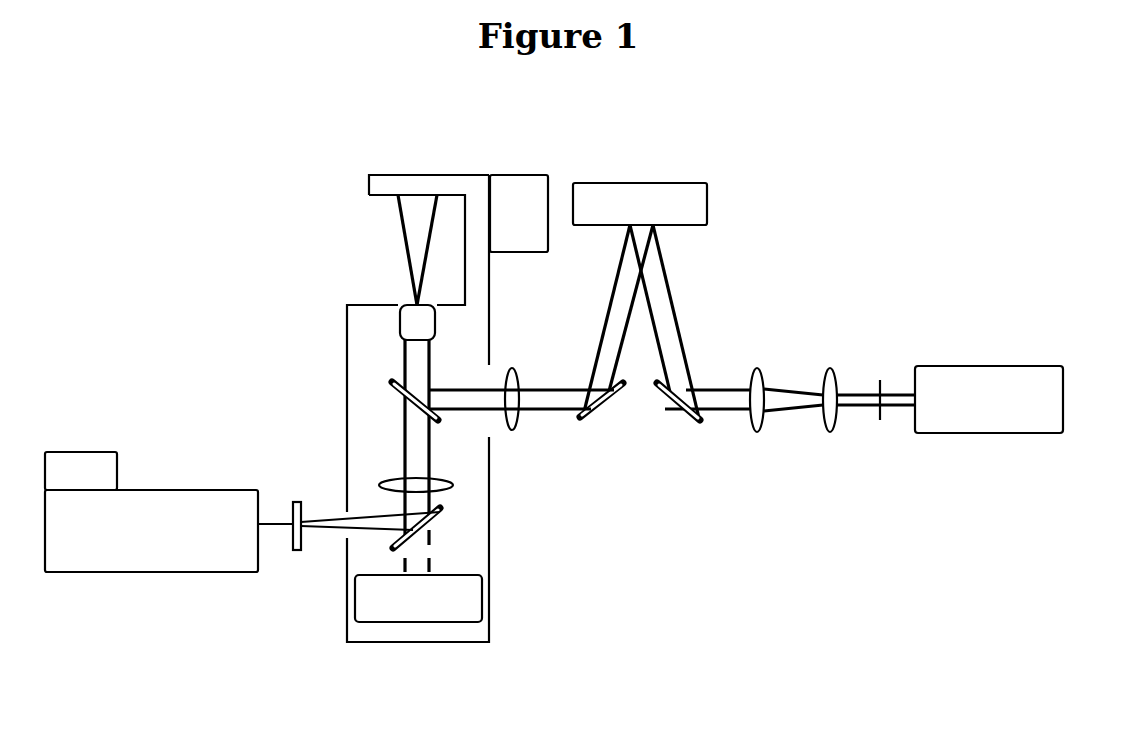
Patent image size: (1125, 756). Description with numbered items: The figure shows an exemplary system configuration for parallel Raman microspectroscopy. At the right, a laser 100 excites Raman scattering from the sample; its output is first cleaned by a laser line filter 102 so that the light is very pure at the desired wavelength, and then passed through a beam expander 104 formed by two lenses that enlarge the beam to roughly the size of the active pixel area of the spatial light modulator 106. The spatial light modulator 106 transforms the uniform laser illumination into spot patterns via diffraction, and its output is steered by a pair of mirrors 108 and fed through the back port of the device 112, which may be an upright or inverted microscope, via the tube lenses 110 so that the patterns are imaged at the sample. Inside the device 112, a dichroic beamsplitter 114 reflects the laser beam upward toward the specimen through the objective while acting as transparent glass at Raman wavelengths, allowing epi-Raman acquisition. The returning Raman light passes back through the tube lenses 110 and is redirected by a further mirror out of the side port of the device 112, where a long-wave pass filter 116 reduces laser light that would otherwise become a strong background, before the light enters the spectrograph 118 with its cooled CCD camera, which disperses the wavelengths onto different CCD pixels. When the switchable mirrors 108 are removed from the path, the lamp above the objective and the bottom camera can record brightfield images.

The laser 100 is at (1052, 358).
The laser line filter 102 is at (880, 323).
The beam expander 104 is at (827, 332).
The spatial light modulator 106 is at (643, 183).
The mirrors 108 is at (667, 450).
The tube lenses 110 is at (521, 406).
The device 112 is at (423, 680).
The dichroic beamsplitter 114 is at (340, 395).
The long-wave pass filter 116 is at (303, 552).
The spectrograph 118 is at (153, 590).